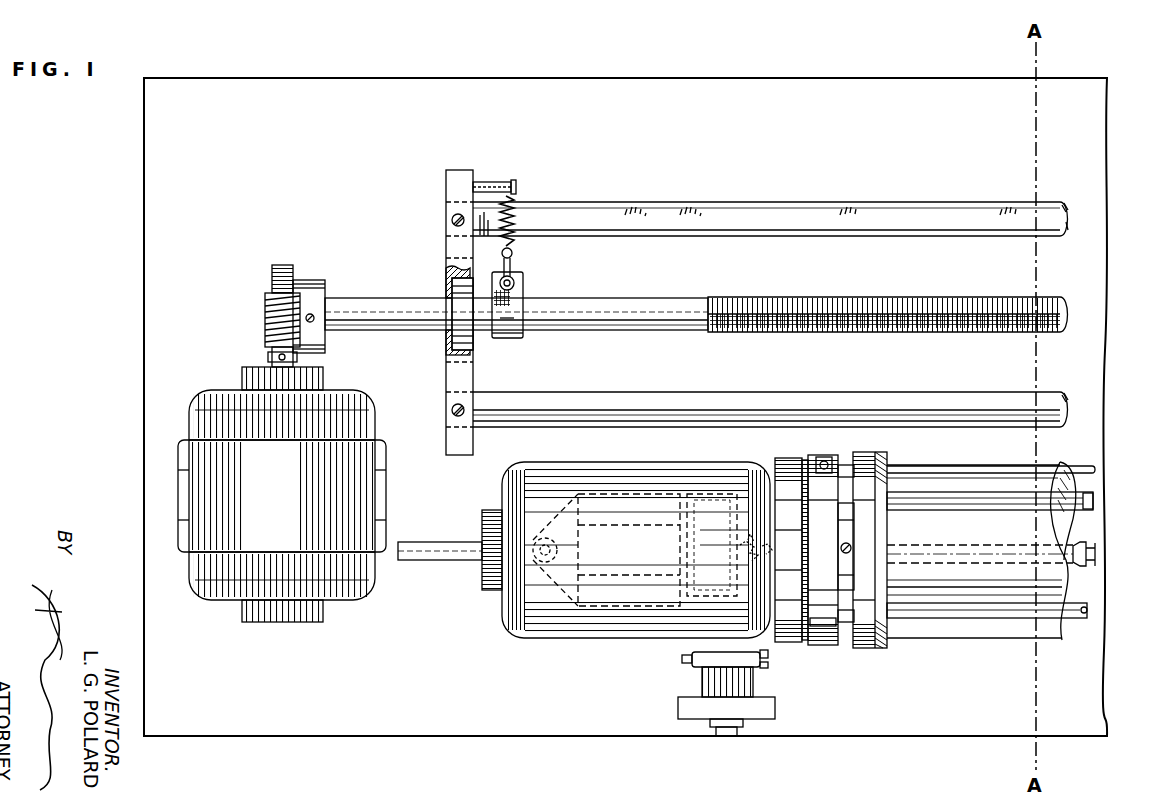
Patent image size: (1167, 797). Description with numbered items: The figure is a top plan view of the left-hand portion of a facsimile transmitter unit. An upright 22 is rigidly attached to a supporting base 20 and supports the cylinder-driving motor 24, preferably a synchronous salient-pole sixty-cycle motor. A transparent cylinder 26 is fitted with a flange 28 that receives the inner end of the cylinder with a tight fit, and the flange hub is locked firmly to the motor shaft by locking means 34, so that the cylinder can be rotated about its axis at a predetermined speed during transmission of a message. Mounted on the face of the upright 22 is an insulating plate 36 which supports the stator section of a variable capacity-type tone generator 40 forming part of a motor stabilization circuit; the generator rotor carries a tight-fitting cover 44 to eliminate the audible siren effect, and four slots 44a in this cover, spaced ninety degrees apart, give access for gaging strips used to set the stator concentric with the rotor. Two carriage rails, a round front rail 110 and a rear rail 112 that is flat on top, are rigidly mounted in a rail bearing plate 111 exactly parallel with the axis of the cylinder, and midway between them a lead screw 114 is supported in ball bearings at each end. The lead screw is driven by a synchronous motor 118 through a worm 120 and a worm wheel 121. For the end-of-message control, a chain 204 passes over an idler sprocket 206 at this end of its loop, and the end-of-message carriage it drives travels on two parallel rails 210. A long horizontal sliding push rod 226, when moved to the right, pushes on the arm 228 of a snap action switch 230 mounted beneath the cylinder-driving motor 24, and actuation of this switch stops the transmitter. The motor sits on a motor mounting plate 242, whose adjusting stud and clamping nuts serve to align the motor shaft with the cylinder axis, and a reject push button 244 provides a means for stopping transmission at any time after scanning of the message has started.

The supporting base 20 is at (432, 733).
The upright 22 is at (782, 642).
The cylinder-driving motor 24 is at (637, 559).
The transparent cylinder 26 is at (955, 640).
The flange 28 is at (872, 456).
The locking means 34 is at (850, 547).
The insulating plate 36 is at (806, 462).
The tone generator 40 is at (836, 541).
The cover 44 is at (824, 462).
The slots 44a is at (822, 642).
The front carriage rail 110 is at (773, 410).
The rail bearing plate 111 is at (448, 260).
The rear carriage rail 112 is at (793, 211).
The lead screw 114 is at (812, 332).
The synchronous motor 118 is at (298, 502).
The worm 120 is at (268, 322).
The worm wheel 121 is at (272, 282).
The chain 204 is at (1096, 552).
The idler sprocket 206 is at (755, 556).
The parallel rails 210 is at (1098, 500).
The sliding push rod 226 is at (1097, 469).
The switch arm 228 is at (744, 472).
The snap action switch 230 is at (690, 512).
The motor mounting plate 242 is at (597, 494).
The reject push button 244 is at (728, 738).